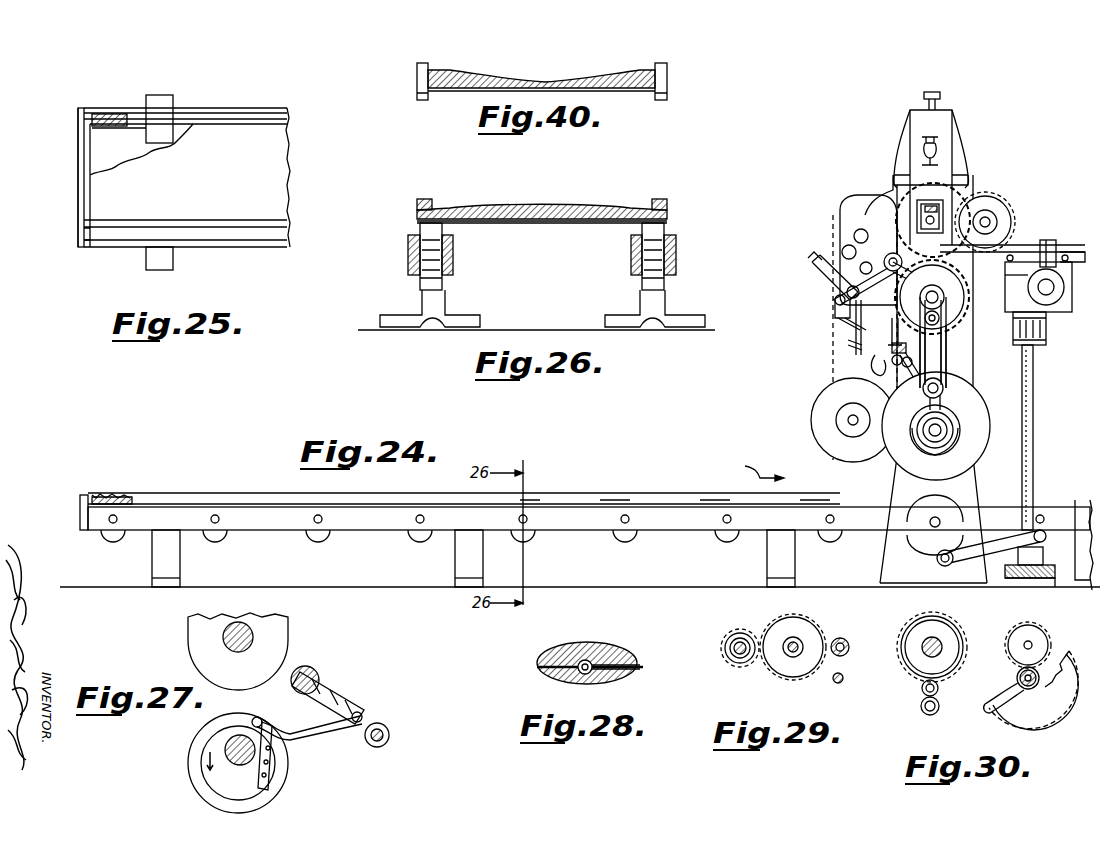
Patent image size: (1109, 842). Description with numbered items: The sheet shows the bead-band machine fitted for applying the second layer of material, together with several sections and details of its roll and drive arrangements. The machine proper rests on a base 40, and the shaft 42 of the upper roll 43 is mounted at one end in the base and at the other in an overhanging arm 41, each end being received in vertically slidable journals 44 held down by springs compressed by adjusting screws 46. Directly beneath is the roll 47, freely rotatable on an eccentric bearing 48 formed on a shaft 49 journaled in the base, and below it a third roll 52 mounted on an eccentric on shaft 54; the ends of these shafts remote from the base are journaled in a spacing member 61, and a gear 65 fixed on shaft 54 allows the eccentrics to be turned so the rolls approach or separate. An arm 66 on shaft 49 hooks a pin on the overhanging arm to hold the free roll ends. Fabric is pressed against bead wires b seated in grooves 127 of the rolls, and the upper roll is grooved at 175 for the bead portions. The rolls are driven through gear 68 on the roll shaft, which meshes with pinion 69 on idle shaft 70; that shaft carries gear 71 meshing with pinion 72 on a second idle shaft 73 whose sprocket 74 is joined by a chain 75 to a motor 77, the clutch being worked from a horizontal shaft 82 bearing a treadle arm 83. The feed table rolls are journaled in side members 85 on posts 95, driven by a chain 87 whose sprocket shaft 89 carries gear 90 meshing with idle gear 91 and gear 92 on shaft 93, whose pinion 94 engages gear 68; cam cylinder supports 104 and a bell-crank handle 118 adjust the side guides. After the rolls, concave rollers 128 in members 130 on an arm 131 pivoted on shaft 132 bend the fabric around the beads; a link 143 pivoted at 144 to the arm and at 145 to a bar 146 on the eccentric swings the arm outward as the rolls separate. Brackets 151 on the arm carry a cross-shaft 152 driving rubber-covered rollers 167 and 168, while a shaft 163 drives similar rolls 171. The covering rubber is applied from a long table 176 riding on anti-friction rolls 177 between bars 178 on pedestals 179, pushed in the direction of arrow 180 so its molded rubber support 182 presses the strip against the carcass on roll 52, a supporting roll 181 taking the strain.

In FIG. 24, the base 40 is at (905, 474).
In FIG. 24, the overhanging arm 41 is at (945, 150).
In FIG. 24, the shaft 42 is at (920, 215).
In FIG. 27, the shaft 42 is at (252, 634).
In FIG. 29, the shaft 42 is at (790, 655).
In FIG. 24, the roll 43 is at (966, 195).
In FIG. 27, the roll 43 is at (188, 633).
In FIG. 24, the vertically slidable journals 44 is at (933, 200).
In FIG. 24, the adjusting screws 46 is at (940, 96).
In FIG. 24, the roll 47 is at (955, 318).
In FIG. 27, the roll 47 is at (188, 763).
In FIG. 27, the eccentric bearing 48 is at (213, 781).
In FIG. 27, the shaft 49 is at (225, 748).
In FIG. 24, the third roll 52 is at (972, 443).
In FIG. 24, the shaft 54 is at (920, 452).
In FIG. 24, the spacing member 61 is at (945, 390).
In FIG. 24, the gear 65 is at (960, 428).
In FIG. 24, the arm 66 is at (952, 368).
In FIG. 29, the gear 68 is at (805, 620).
In FIG. 29, the pinion 69 is at (845, 638).
In FIG. 29, the idle shaft 70 is at (846, 645).
In FIG. 30, the idle shaft 70 is at (1035, 645).
In FIG. 30, the gear 71 is at (1028, 624).
In FIG. 30, the pinion 72 is at (1018, 680).
In FIG. 30, the second idle shaft 73 is at (1010, 700).
In FIG. 30, the sprocket 74 is at (1048, 726).
In FIG. 24, the chain 75 is at (840, 345).
In FIG. 24, the motor 77 is at (812, 415).
In FIG. 24, the horizontal shaft 82 is at (938, 558).
In FIG. 24, the treadle arm 83 is at (1040, 535).
In FIG. 24, the side members 85 is at (1072, 272).
In FIG. 24, the chain 87 is at (1073, 245).
In FIG. 30, the shaft 89 is at (920, 708).
In FIG. 30, the gear 90 is at (925, 712).
In FIG. 30, the idle gear 91 is at (920, 690).
In FIG. 24, the gear 92 is at (1004, 200).
In FIG. 30, the gear 92 is at (944, 628).
In FIG. 29, the shaft 93 is at (733, 655).
In FIG. 30, the shaft 93 is at (940, 647).
In FIG. 29, the pinion 94 is at (730, 636).
In FIG. 24, the posts 95 is at (1034, 420).
In FIG. 24, the supports 104 is at (1048, 313).
In FIG. 24, the handle 118 is at (1046, 240).
In FIG. 28, the grooves 127 is at (560, 680).
In FIG. 24, the concave rollers 128 is at (882, 278).
In FIG. 27, the members 130 is at (390, 733).
In FIG. 24, the arm 131 is at (838, 240).
In FIG. 27, the arm 131 is at (336, 697).
In FIG. 24, the shaft 132 is at (899, 246).
In FIG. 27, the shaft 132 is at (318, 672).
In FIG. 24, the link 143 is at (873, 327).
In FIG. 27, the link 143 is at (318, 738).
In FIG. 27, the pivot 144 is at (365, 714).
In FIG. 27, the pivot 145 is at (260, 717).
In FIG. 27, the bar 146 is at (275, 780).
In FIG. 24, the brackets 151 is at (832, 318).
In FIG. 24, the cross-shaft 152 is at (822, 300).
In FIG. 24, the shaft 163 is at (905, 365).
In FIG. 24, the rollers 167 is at (870, 362).
In FIG. 24, the rollers 168 is at (838, 332).
In FIG. 24, the rolls 171 is at (890, 330).
In FIG. 28, the groove 175 is at (540, 652).
In FIG. 26, the table 176 is at (560, 224).
In FIG. 24, the table 176 is at (583, 492).
In FIG. 25, the anti-friction rolls 177 is at (78, 120).
In FIG. 26, the anti-friction rolls 177 is at (420, 276).
In FIG. 24, the anti-friction rolls 177 is at (320, 538).
In FIG. 25, the bars 178 is at (131, 112).
In FIG. 26, the bars 178 is at (408, 250).
In FIG. 24, the bars 178 is at (380, 530).
In FIG. 25, the pedestals 179 is at (165, 105).
In FIG. 24, the pedestals 179 is at (180, 557).
In FIG. 24, the arrow 180 is at (742, 466).
In FIG. 24, the supporting roll 181 is at (938, 495).
In FIG. 25, the molded rubber support 182 is at (184, 177).
In FIG. 40, the molded rubber support 182 is at (495, 75).
In FIG. 26, the molded rubber support 182 is at (558, 212).
In FIG. 28, the bead wires b is at (598, 660).